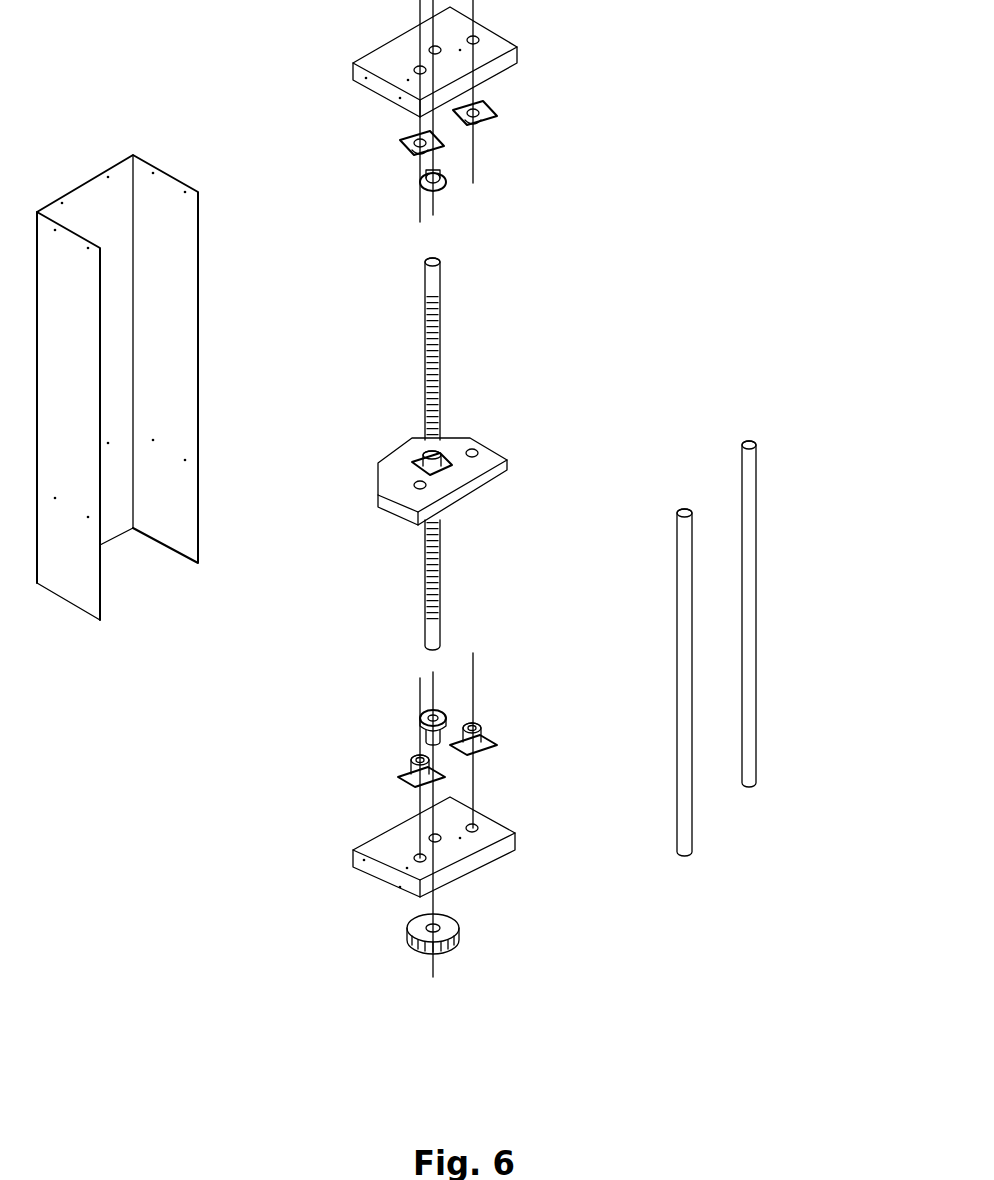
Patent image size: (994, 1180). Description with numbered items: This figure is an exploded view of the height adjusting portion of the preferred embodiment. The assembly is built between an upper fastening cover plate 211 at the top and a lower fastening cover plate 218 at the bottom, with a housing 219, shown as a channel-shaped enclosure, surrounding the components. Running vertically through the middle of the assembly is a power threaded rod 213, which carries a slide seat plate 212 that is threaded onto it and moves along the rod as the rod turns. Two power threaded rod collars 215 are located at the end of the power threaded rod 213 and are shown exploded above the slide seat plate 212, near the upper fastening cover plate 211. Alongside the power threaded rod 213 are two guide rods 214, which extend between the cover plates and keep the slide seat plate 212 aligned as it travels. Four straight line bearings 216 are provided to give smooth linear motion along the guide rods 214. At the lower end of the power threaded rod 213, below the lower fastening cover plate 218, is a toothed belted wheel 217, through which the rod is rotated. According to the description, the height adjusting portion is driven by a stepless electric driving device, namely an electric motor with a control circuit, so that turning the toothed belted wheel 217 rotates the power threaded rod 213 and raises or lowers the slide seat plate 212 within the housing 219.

The upper fastening cover plate 211 is at (517, 60).
The slide seat plate 212 is at (513, 460).
The power threaded rod 213 is at (452, 328).
The guide rods 214 is at (760, 590).
The power threaded rod collars 215 is at (450, 183).
The straight line bearings 216 is at (398, 774).
The toothed belted wheel 217 is at (407, 942).
The lower fastening cover plate 218 is at (353, 863).
The housing 219 is at (115, 540).